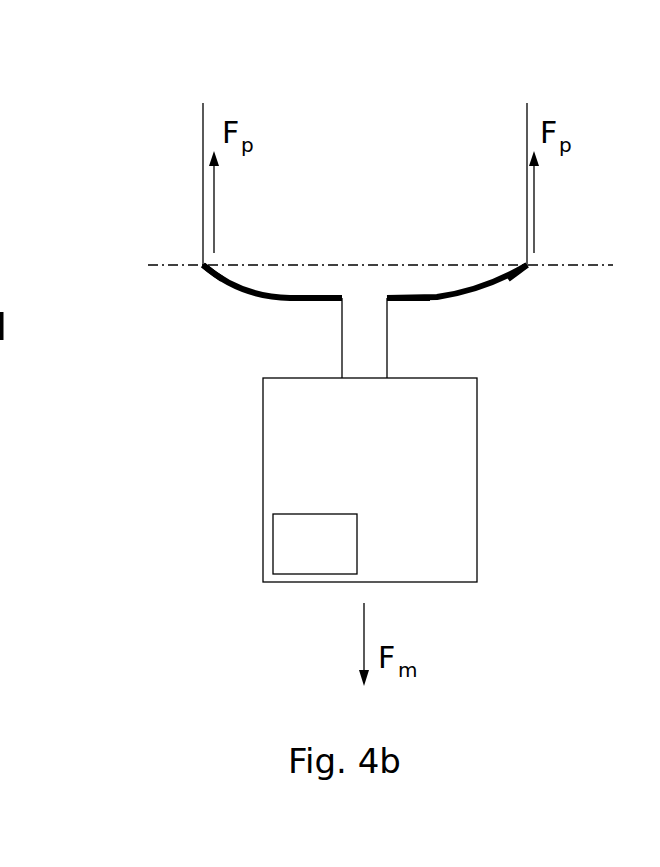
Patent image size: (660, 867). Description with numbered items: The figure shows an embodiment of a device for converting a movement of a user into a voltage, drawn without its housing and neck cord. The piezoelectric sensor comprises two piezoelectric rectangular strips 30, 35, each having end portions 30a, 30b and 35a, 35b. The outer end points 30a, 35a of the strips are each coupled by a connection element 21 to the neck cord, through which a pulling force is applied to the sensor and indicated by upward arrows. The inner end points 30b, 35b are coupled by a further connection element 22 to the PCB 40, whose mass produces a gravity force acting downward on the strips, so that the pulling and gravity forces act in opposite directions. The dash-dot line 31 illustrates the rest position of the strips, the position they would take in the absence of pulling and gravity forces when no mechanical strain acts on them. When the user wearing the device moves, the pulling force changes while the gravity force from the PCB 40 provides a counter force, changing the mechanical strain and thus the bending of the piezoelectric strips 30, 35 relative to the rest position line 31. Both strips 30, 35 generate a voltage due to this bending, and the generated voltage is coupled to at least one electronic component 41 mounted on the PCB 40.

The connection element 21 is at (208, 113).
The further connection element 22 is at (383, 340).
The piezoelectric rectangular strip 30 is at (307, 288).
The end portion of piezoelectric strip 30a is at (205, 277).
The end portion of piezoelectric strip 30b is at (337, 302).
The rest position line 31 is at (590, 268).
The piezoelectric rectangular strip 35 is at (455, 287).
The end portion of piezoelectric strip 35a is at (528, 270).
The end portion of piezoelectric strip 35b is at (397, 302).
The PCB 40 is at (467, 513).
The electronic component 41 is at (327, 562).